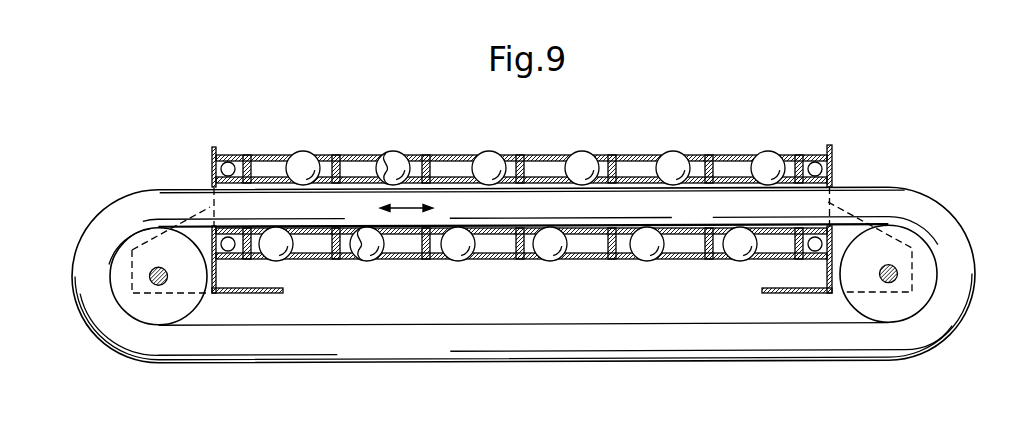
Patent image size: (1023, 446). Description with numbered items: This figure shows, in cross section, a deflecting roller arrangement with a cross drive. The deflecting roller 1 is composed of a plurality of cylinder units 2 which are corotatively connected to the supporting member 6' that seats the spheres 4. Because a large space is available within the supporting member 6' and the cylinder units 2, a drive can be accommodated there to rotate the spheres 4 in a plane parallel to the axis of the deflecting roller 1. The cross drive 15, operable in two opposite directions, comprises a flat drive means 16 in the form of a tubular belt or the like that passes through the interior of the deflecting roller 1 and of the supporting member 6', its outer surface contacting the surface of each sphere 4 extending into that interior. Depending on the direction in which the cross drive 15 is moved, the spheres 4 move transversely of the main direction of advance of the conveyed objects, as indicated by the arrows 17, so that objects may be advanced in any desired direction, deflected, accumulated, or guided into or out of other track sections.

The deflecting roller 1 is at (447, 156).
The cylinder unit 2 is at (259, 153).
The sphere 4 is at (306, 152).
The supporting member 6' is at (521, 223).
The cross drive 15 is at (907, 186).
The flat drive means 16 is at (142, 200).
The arrows 17 is at (401, 152).